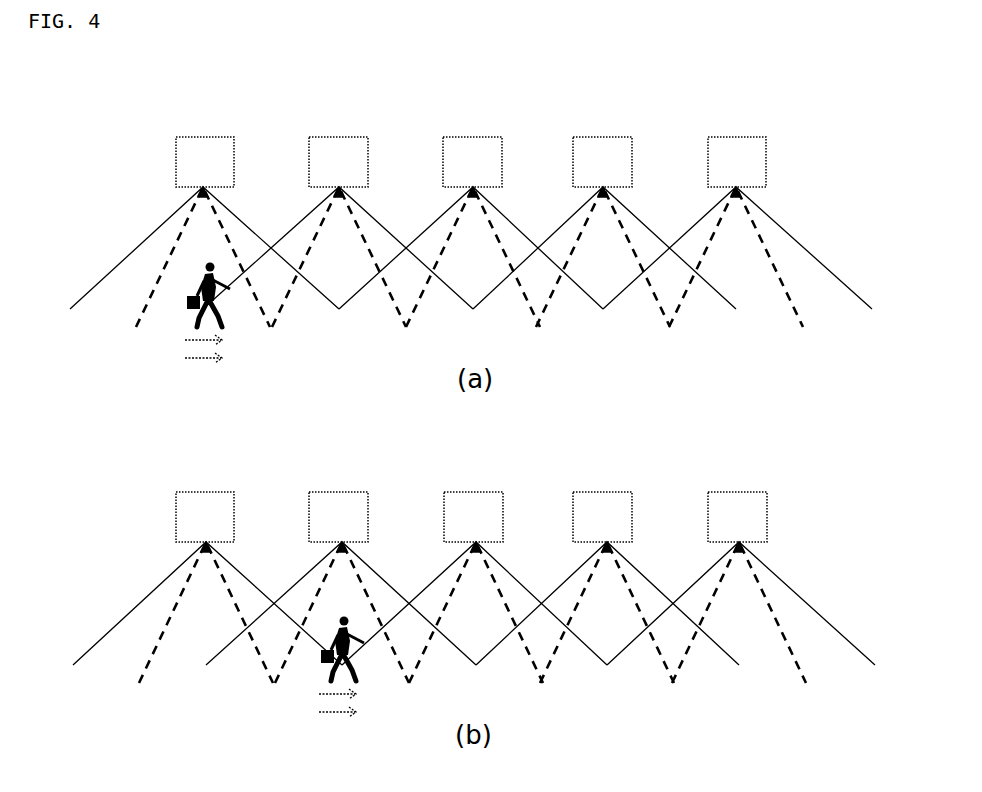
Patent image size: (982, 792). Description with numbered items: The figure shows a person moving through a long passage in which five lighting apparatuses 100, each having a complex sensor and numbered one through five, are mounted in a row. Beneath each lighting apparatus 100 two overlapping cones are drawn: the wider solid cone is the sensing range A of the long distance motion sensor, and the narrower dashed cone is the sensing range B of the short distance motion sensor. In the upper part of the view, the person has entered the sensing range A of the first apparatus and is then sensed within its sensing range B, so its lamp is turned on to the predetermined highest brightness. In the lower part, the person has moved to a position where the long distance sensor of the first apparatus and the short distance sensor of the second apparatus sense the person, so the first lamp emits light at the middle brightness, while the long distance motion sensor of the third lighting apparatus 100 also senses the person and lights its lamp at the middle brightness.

The lighting apparatus 100 is at (766, 156).
The sensing range of the long distance motion sensor A is at (126, 262).
The sensing range of the short distance motion sensor B is at (168, 260).